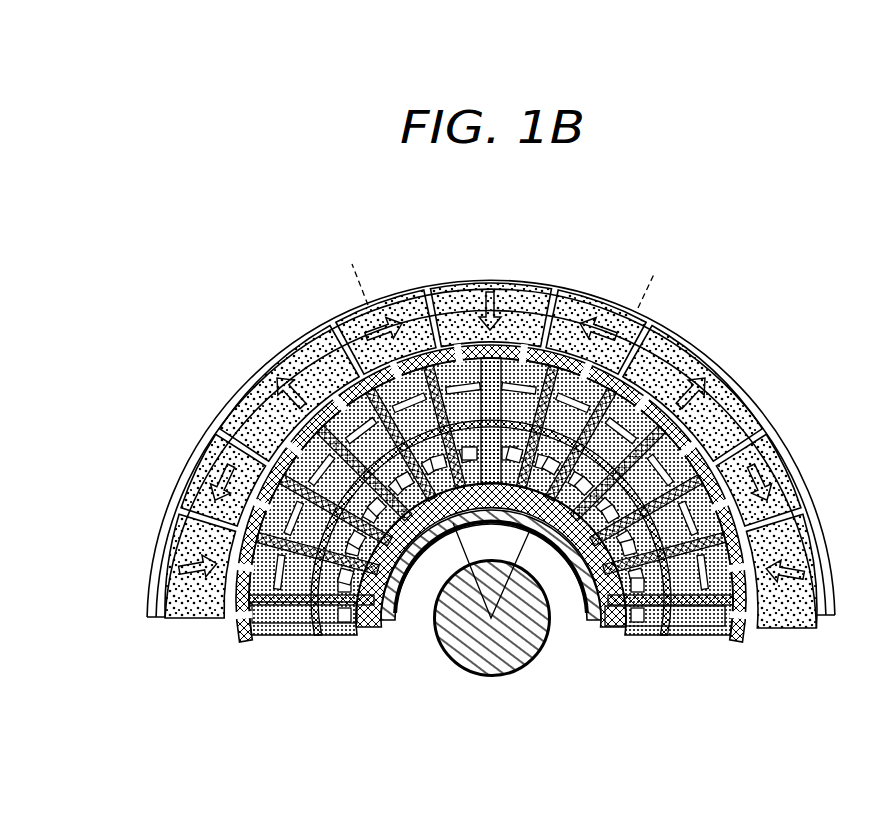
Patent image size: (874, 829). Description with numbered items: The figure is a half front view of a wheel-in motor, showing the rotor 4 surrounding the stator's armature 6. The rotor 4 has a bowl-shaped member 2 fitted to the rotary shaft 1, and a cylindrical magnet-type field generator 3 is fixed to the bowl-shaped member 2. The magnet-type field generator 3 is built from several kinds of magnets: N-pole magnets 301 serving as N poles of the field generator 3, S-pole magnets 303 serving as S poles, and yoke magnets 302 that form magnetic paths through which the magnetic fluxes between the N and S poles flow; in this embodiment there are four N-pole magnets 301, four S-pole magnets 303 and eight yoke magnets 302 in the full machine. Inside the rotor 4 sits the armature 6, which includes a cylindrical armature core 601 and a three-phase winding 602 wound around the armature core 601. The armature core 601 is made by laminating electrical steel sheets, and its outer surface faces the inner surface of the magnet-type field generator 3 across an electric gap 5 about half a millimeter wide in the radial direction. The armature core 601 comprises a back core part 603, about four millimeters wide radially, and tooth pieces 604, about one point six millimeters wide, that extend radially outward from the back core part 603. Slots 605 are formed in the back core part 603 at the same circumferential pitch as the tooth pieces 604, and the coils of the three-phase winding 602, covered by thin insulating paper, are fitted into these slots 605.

The rotary shaft 1 is at (471, 645).
The bowl-shaped member 2 is at (182, 502).
The magnet-type field generator 3 is at (453, 418).
The rotor 4 is at (183, 596).
The electric gap 5 is at (740, 450).
The N-pole magnet 301 is at (456, 293).
The yoke magnet 302 is at (347, 323).
The S-pole magnet 303 is at (250, 397).
The armature 6 is at (545, 540).
The armature core 601 is at (340, 613).
The three-phase winding 602 is at (570, 585).
The back core part 603 is at (582, 565).
The tooth piece 604 is at (742, 622).
The slot 605 is at (695, 590).